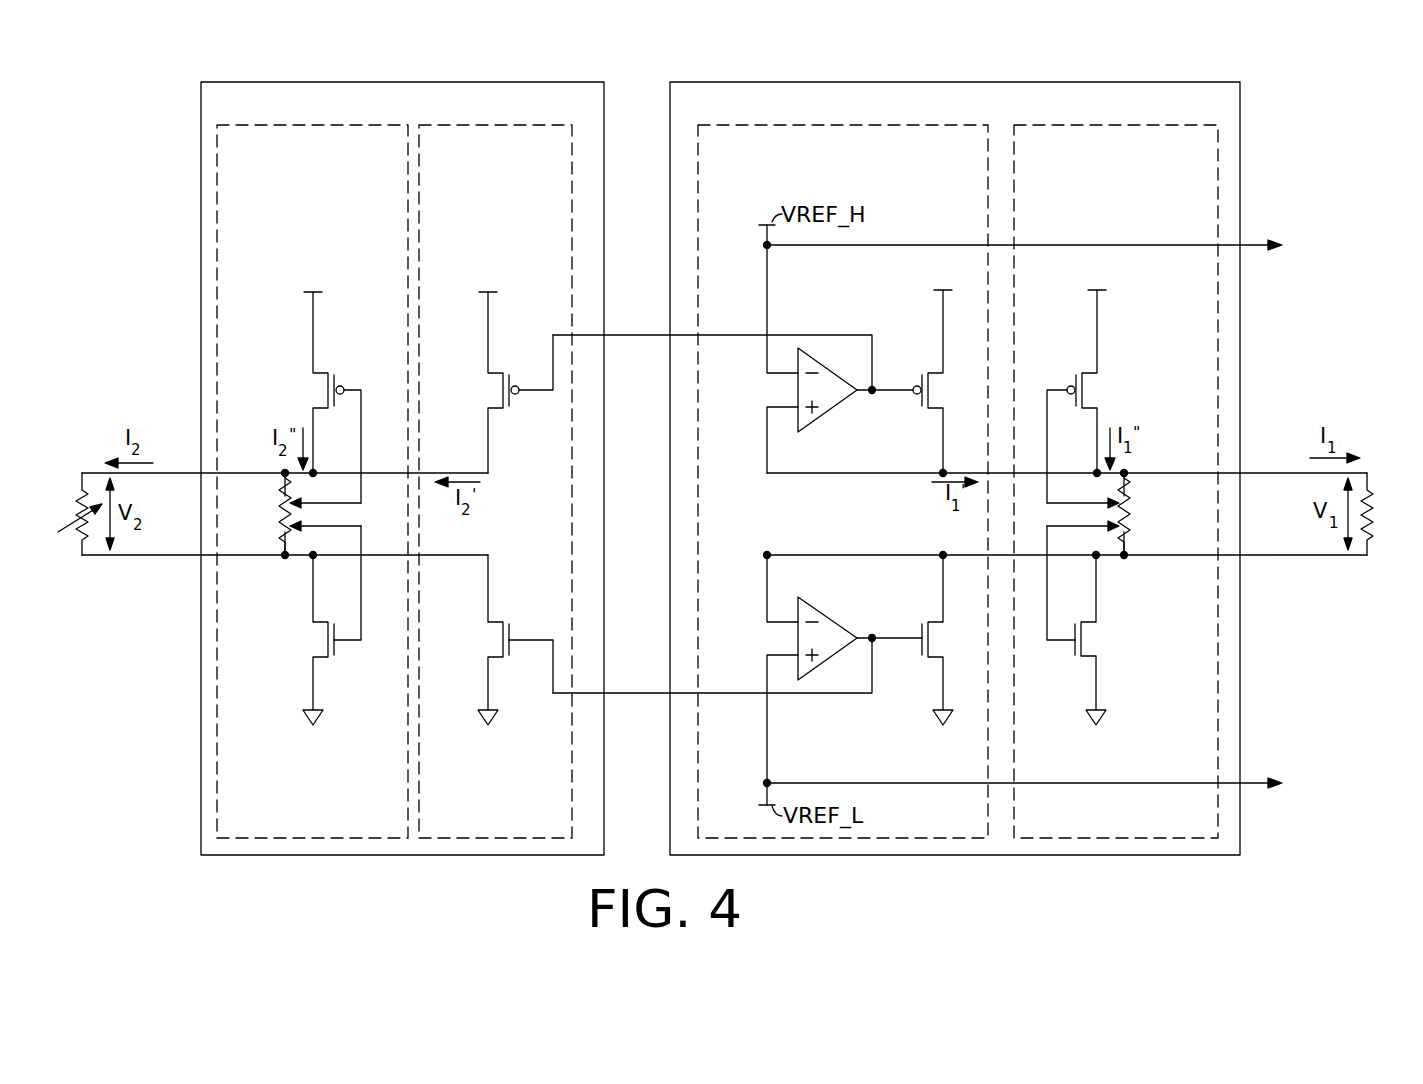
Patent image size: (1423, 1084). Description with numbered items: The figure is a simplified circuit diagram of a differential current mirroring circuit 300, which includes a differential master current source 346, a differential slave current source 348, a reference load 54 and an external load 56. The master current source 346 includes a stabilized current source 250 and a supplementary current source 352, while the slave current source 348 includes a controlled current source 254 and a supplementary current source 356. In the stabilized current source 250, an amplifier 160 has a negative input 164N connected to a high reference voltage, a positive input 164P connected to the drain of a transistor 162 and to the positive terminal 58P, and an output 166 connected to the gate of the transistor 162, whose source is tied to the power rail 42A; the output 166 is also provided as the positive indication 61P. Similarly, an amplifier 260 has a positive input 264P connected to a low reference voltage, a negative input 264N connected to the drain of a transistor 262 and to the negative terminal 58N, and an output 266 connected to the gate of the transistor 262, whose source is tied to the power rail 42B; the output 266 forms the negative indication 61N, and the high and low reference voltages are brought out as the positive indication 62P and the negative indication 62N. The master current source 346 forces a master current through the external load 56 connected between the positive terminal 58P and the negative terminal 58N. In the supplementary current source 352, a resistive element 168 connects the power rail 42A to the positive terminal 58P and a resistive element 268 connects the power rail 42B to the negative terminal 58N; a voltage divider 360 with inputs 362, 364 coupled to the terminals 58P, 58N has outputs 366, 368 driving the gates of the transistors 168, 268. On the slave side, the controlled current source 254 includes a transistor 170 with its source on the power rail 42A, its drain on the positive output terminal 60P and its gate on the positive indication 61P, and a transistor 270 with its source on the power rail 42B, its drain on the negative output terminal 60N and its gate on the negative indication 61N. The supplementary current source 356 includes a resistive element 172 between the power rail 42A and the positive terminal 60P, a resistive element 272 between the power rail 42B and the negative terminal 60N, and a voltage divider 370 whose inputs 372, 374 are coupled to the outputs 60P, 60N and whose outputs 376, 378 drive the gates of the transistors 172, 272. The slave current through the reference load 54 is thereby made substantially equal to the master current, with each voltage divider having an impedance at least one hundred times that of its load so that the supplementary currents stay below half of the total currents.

The differential current mirroring circuit 300 is at (1266, 165).
The differential slave current source 348 is at (402, 468).
The differential master current source 346 is at (955, 468).
The supplementary current source 356 is at (312, 481).
The controlled current source 254 is at (495, 481).
The stabilized current source 250 is at (843, 481).
The supplementary current source 352 is at (1116, 481).
The power rail 42A is at (313, 291).
The power rail 42B is at (309, 722).
The resistive element 172 is at (318, 372).
The transistor 170 is at (497, 410).
The resistive element 272 is at (318, 660).
The transistor 270 is at (497, 620).
The transistor 162 is at (932, 372).
The resistive element 168 is at (1081, 370).
The transistor 262 is at (935, 660).
The resistive element 268 is at (1081, 660).
The amplifier 160 is at (822, 415).
The output 166 is at (862, 398).
The negative input 164N is at (780, 374).
The positive input 164P is at (780, 407).
The amplifier 260 is at (818, 616).
The output 266 is at (862, 632).
The negative input 264N is at (780, 622).
The positive input 264P is at (780, 655).
The voltage divider 370 is at (281, 512).
The input 372 is at (283, 482).
The input 374 is at (283, 548).
The output 376 is at (306, 500).
The output 378 is at (306, 529).
The voltage divider 360 is at (1130, 514).
The input 362 is at (1128, 482).
The input 364 is at (1130, 546).
The output 366 is at (1105, 500).
The output 368 is at (1105, 529).
The reference load 54 is at (71, 514).
The external load 56 is at (1372, 528).
The positive output terminal 60P is at (193, 474).
The negative output terminal 60N is at (190, 557).
The positive terminal 58P is at (1248, 475).
The negative terminal 58N is at (1248, 557).
The positive indication 61P is at (618, 334).
The negative indication 61N is at (618, 694).
The positive indication 62P is at (1257, 240).
The negative indication 62N is at (1257, 784).